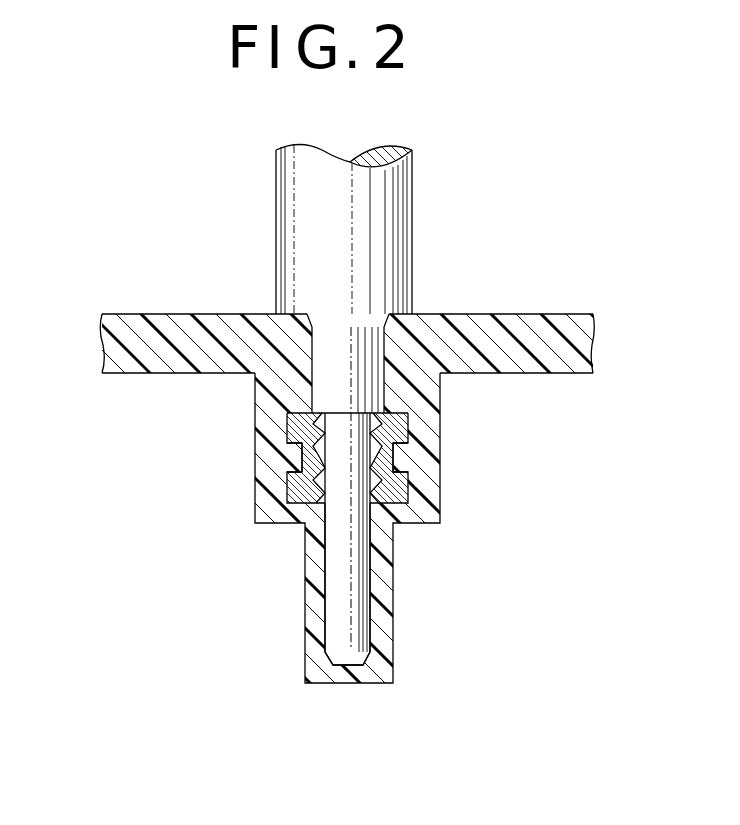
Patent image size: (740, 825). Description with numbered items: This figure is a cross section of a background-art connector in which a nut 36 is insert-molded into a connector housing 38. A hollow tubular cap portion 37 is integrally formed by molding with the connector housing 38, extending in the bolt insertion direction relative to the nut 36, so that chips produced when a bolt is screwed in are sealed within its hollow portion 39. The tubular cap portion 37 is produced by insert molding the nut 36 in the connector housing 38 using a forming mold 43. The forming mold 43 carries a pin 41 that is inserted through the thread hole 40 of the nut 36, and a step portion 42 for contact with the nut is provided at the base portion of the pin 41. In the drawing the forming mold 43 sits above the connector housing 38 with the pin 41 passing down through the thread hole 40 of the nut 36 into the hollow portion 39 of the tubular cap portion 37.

The nut 36 is at (409, 428).
The hollow tubular cap portion 37 is at (394, 654).
The connector housing 38 is at (502, 313).
The hollow portion 39 is at (322, 613).
The thread hole 40 is at (318, 501).
The pin 41 is at (338, 581).
The step portion 42 is at (300, 432).
The forming mold 43 is at (275, 204).